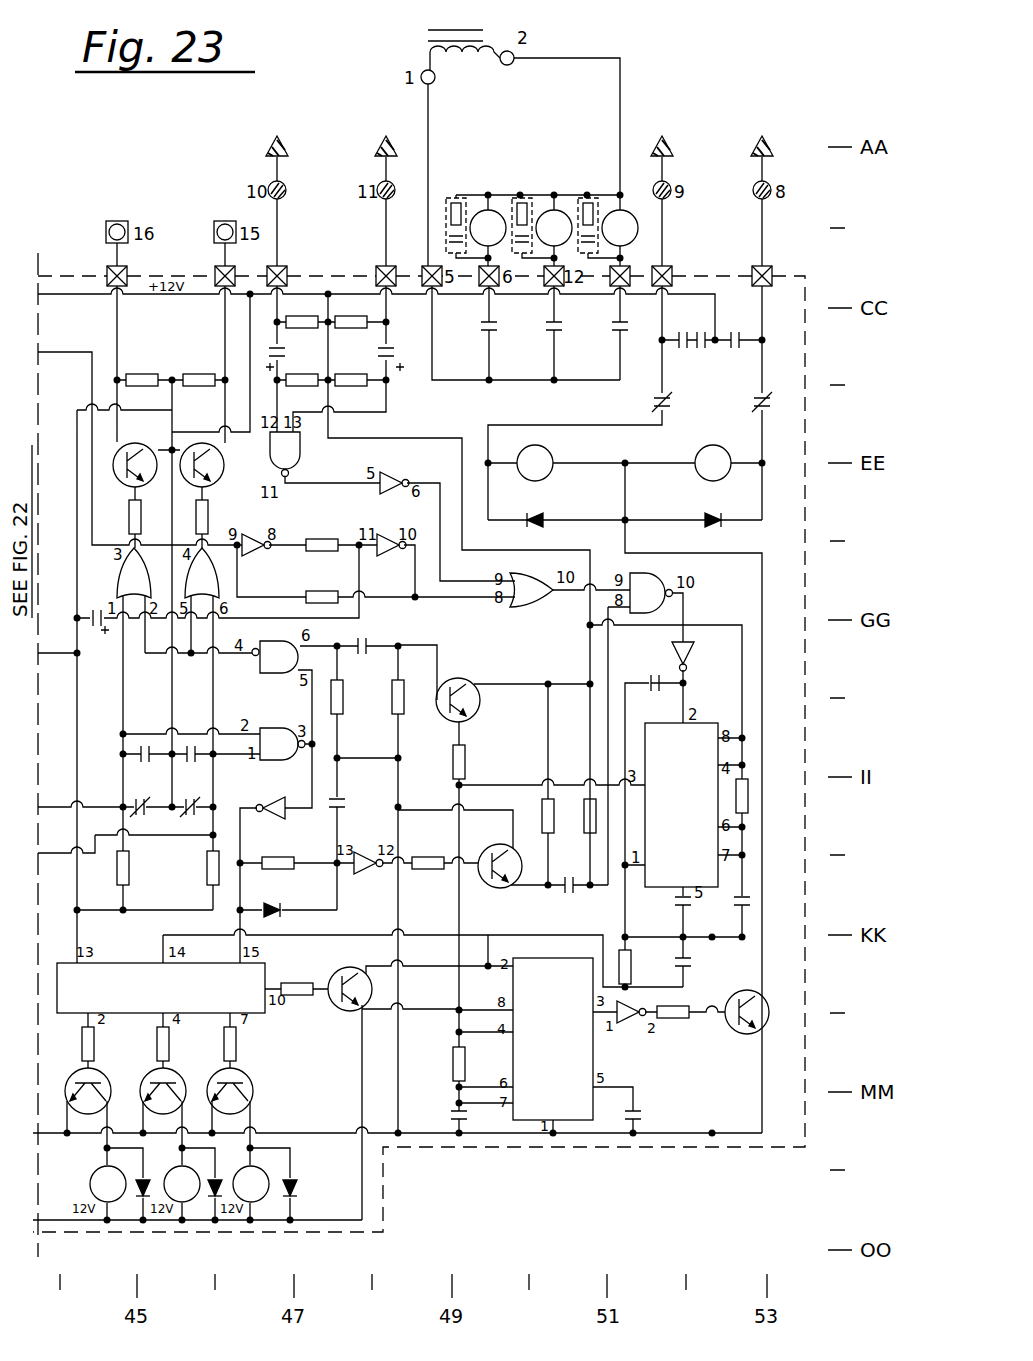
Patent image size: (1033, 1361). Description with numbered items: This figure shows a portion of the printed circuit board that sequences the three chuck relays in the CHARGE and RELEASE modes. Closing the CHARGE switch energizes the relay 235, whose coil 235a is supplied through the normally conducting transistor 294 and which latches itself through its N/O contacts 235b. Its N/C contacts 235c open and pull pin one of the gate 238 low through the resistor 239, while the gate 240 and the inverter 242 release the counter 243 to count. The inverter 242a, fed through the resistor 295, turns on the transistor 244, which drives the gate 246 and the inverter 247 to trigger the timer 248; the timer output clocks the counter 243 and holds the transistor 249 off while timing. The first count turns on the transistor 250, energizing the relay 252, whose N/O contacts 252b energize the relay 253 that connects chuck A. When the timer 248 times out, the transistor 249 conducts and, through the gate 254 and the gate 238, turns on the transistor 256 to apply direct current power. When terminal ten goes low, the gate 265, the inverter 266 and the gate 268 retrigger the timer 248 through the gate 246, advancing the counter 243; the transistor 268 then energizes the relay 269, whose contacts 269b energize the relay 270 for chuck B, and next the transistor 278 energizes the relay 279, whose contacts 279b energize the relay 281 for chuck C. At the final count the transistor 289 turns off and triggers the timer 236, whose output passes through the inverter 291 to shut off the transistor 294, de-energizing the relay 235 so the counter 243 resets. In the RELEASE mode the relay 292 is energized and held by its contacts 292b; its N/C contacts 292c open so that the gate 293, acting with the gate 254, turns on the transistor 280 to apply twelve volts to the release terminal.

The relay 235 is at (556, 457).
The coil of relay 235 235a is at (535, 445).
The N/O contacts 235b is at (683, 348).
The N/C contacts 235c is at (120, 808).
The timer 236 is at (568, 960).
The gate 238 is at (120, 592).
The resistor 239 is at (130, 876).
The gate 240 is at (278, 738).
The inverter 242 is at (276, 818).
The inverter 242a is at (366, 853).
The counter 243 is at (127, 968).
The transistor 244 is at (503, 886).
The gate 246 is at (655, 584).
The inverter 247 is at (688, 660).
The timer 248 is at (658, 690).
The transistor 249 is at (468, 683).
The transistor 250 is at (70, 1078).
The relay 252 is at (88, 1180).
The N/O contacts 252b is at (476, 330).
The relay 253 is at (480, 212).
The gate 254 is at (258, 666).
The transistor 256 is at (143, 447).
The gate 265 is at (300, 460).
The inverter 266 is at (380, 494).
The gate / transistor 268 is at (535, 584).
The relay 269 is at (192, 1206).
The N/O contacts 269b is at (541, 330).
The relay 270 is at (547, 212).
The transistor 278 is at (250, 1088).
The relay 279 is at (262, 1172).
The N/O contacts 279b is at (608, 330).
The transistor 280 is at (208, 446).
The relay 281 is at (622, 193).
The transistor 289 is at (352, 968).
The inverter 291 is at (632, 1026).
The relay 292 is at (712, 445).
The N/O contacts 292b is at (738, 352).
The N/C contacts 292c is at (192, 796).
The gate 293 is at (210, 588).
The transistor 294 is at (750, 1034).
The resistor 295 is at (276, 869).